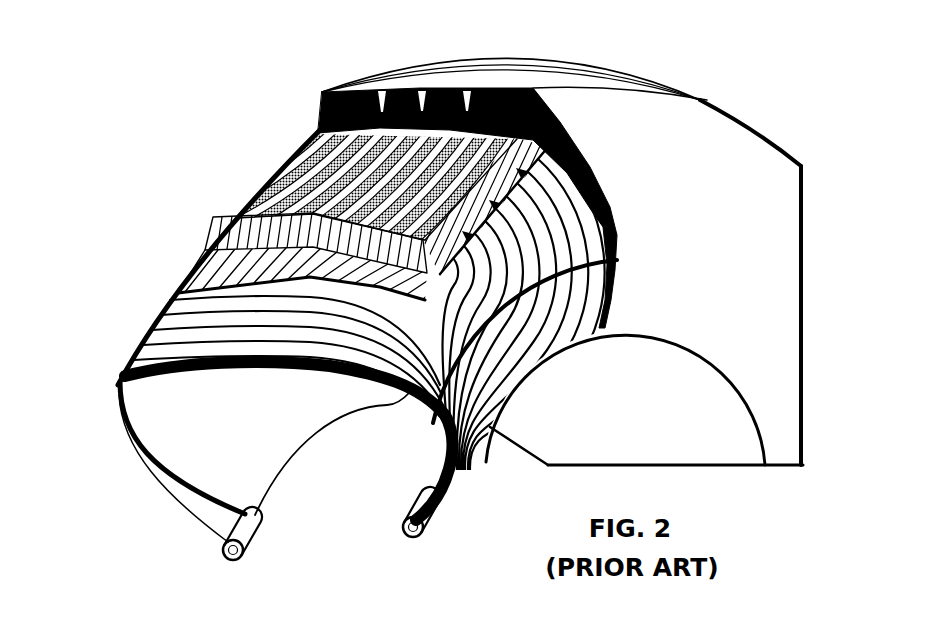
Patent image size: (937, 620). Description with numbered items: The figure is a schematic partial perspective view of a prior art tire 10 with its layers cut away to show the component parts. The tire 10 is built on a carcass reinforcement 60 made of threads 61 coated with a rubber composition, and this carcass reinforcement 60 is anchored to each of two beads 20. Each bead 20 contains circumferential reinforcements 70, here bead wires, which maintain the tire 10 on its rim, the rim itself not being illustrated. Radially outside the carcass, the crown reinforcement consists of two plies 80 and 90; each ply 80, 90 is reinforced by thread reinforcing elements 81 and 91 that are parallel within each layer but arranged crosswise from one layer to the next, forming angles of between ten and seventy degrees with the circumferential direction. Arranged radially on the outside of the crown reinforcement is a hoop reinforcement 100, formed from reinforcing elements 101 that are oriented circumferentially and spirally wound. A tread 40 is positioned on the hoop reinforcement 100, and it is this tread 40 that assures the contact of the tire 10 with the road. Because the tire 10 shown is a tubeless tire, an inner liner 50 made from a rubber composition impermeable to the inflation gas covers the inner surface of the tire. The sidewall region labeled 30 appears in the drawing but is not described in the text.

The tire 10 is at (752, 54).
The beads 20 is at (388, 494).
The sidewall 30 is at (650, 243).
The tread 40 is at (368, 86).
The inner liner 50 is at (213, 424).
The carcass reinforcement 60 is at (72, 336).
The threads 61 is at (165, 296).
The circumferential reinforcements 70 is at (402, 528).
The ply 80 is at (120, 257).
The thread reinforcing elements 81 is at (213, 234).
The ply 90 is at (127, 173).
The thread reinforcing elements 91 is at (258, 192).
The hoop reinforcement 100 is at (178, 25).
The reinforcing elements 101 is at (320, 165).